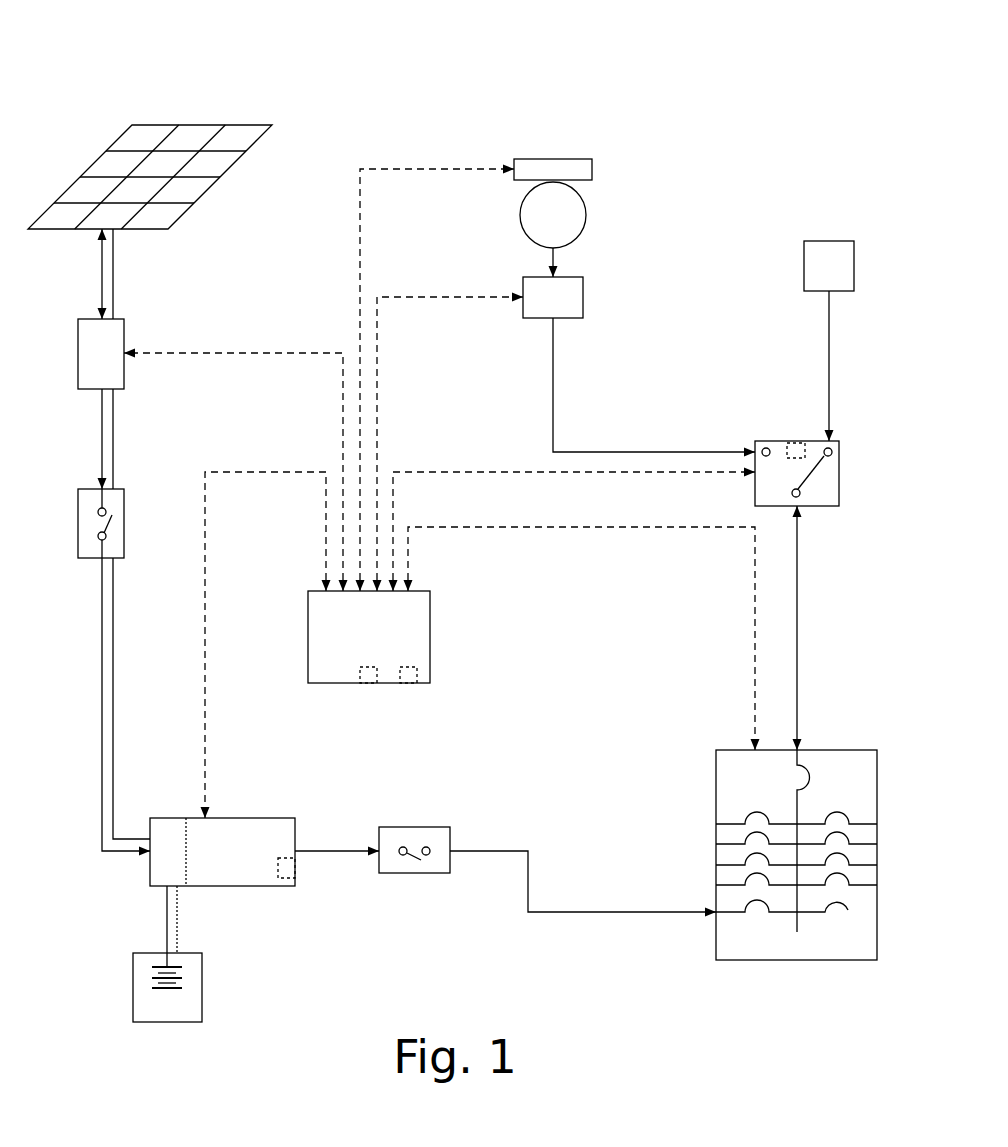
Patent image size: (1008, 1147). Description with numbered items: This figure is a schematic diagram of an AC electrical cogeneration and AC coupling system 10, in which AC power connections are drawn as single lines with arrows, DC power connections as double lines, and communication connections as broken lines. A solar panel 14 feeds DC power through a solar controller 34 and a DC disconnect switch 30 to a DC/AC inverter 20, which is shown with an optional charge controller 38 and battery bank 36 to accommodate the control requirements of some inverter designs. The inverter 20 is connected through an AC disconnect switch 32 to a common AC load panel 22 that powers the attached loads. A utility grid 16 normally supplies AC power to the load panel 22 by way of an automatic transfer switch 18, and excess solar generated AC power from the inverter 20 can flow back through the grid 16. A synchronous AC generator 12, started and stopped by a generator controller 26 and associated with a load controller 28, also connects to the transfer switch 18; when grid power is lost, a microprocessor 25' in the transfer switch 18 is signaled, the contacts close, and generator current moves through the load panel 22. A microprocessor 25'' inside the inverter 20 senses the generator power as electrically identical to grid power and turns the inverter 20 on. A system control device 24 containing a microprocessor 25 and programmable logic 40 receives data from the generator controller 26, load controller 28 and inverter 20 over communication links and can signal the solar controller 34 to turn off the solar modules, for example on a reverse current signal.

The AC electrical cogeneration and AC coupling system 10 is at (56, 55).
The synchronous AC generator 12 is at (540, 227).
The solar panel 14 is at (195, 134).
The utility grid 16 is at (816, 278).
The automatic transfer switch 18 is at (833, 476).
The DC/AC inverter 20 is at (227, 863).
The common AC load panel 22 is at (798, 950).
The system control device 24 is at (355, 646).
The microprocessor 25 is at (361, 697).
The microprocessor 25' is at (793, 428).
The microprocessor 25'' is at (290, 890).
The generator controller 26 is at (553, 161).
The load controller 28 is at (540, 309).
The DC disconnect switch 30 is at (86, 522).
The AC disconnect switch 32 is at (414, 869).
The solar controller 34 is at (88, 366).
The battery bank 36 is at (154, 1016).
The charge controller 38 is at (155, 863).
The programmable logic 40 is at (405, 676).